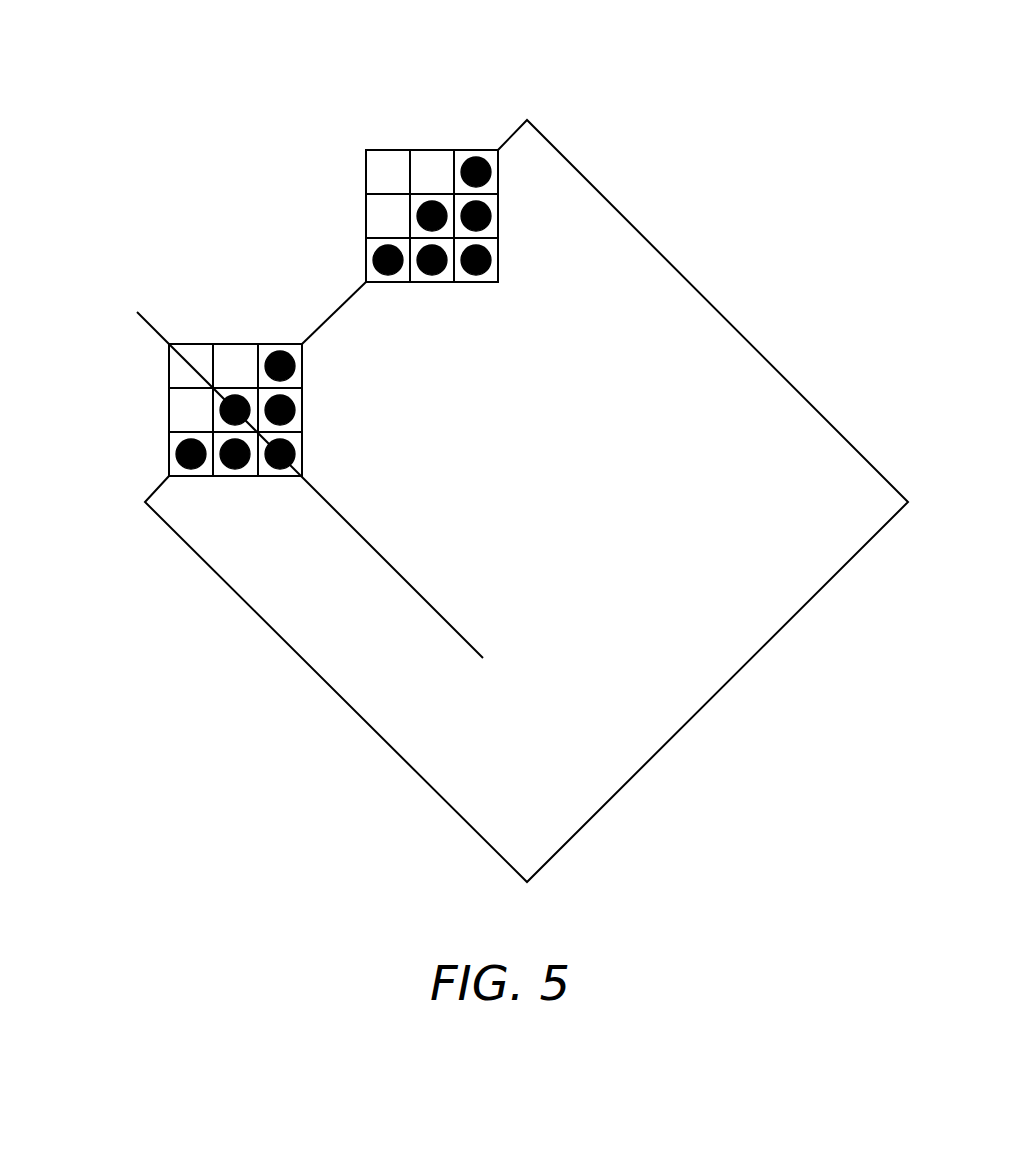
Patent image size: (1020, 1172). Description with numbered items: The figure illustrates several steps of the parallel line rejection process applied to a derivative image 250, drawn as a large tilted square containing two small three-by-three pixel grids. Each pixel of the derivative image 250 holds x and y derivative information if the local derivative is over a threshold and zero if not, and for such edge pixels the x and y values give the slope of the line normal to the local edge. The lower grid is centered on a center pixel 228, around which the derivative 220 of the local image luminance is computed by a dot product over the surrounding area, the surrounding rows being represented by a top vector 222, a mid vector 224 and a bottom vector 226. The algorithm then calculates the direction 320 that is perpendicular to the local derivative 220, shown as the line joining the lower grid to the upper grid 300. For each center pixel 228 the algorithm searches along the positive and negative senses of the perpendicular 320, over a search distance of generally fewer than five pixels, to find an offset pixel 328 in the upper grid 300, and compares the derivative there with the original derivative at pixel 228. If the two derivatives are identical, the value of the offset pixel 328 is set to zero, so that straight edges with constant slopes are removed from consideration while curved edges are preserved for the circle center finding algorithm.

The derivative image 250 is at (327, 685).
The derivative 220 is at (170, 362).
The top vector 222 is at (169, 367).
The mid vector 224 is at (169, 411).
The bottom vector 226 is at (169, 454).
The center pixel 228 is at (237, 396).
The second bond pad array 300 is at (400, 150).
The offset pixel 328 is at (419, 208).
The perpendicular direction 320 is at (345, 297).